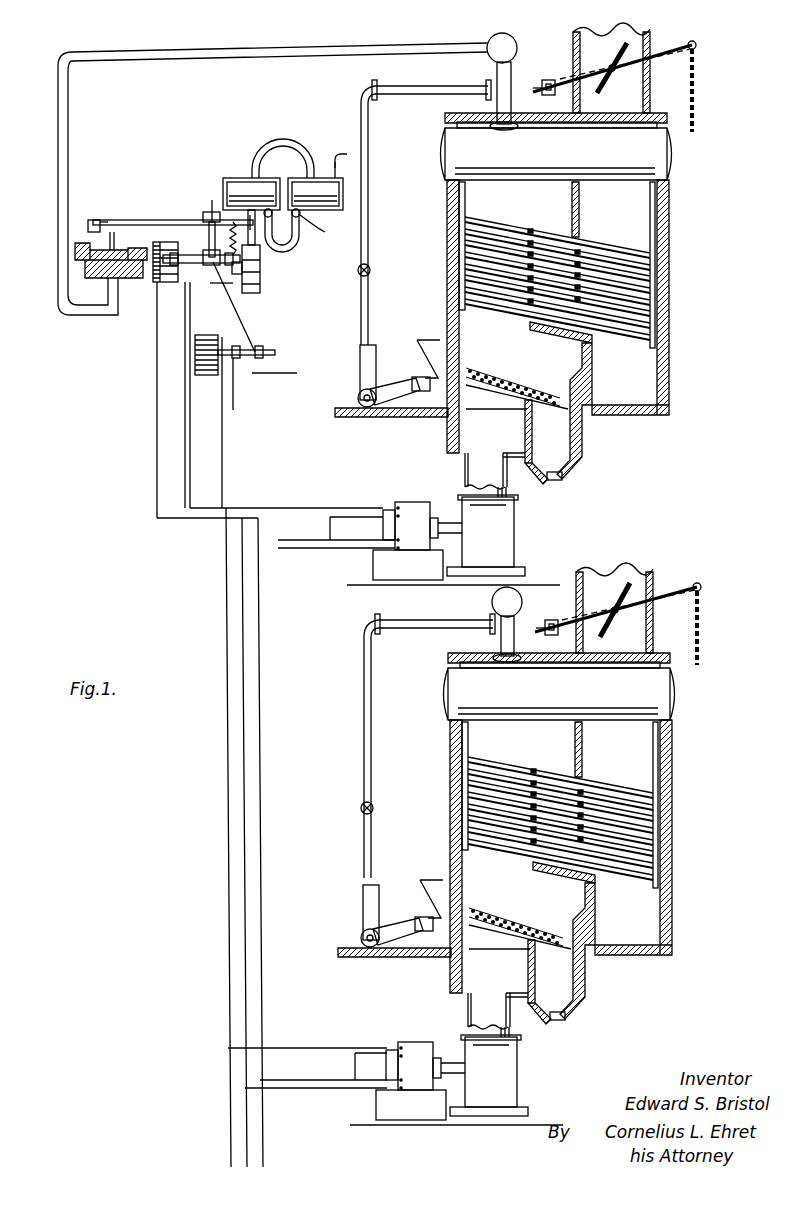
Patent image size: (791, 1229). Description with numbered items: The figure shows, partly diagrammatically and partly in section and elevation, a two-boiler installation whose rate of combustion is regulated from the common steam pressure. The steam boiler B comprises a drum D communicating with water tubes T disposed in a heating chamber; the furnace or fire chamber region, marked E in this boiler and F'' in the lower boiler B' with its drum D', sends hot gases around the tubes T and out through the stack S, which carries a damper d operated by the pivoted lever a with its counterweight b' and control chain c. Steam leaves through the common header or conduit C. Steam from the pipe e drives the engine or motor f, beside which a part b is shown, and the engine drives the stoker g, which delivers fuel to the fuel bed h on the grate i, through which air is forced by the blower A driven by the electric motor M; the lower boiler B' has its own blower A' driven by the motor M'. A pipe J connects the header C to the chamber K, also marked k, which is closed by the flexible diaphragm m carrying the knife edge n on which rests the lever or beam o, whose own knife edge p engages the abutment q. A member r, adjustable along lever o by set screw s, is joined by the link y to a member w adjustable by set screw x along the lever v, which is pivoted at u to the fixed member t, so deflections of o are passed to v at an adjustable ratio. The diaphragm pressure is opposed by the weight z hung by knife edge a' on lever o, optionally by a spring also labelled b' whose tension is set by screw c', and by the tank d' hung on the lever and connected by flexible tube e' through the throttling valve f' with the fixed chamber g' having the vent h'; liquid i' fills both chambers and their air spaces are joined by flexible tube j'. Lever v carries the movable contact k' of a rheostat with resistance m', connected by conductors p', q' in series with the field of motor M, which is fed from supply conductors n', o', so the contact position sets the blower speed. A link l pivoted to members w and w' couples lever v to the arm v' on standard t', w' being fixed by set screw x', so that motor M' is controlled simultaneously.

The air blower A is at (454, 536).
The second air blower A' is at (462, 1076).
The steam boiler B is at (502, 301).
The second steam boiler B' is at (505, 841).
The steam conduit C is at (515, 42).
The drum D is at (583, 161).
The boiler drum (second boiler) D' is at (588, 697).
The water tubes T is at (660, 255).
The coal hopper E is at (558, 403).
The coal hopper (second boiler) F'' is at (546, 943).
The stack S is at (650, 40).
The damper d is at (616, 74).
The tank or chamber d' is at (452, 377).
The pivoted lever a is at (614, 68).
The knife edge a' is at (461, 371).
The counterweight b' is at (427, 339).
The control chain c is at (714, 90).
The adjusting screw c' is at (494, 455).
The fuel bed h is at (513, 370).
The vent h' is at (449, 541).
The grate i is at (517, 418).
The liquid i' is at (457, 581).
The steam pipe e is at (424, 212).
The flexible tube e' is at (290, 248).
The stoker drive cylinder b is at (383, 364).
The engine or motor f is at (384, 391).
The stoker g is at (417, 406).
The electric motor M is at (417, 524).
The second electric motor M' is at (420, 1059).
The pipe J is at (100, 318).
The chamber K is at (120, 278).
The diaphragm m is at (96, 188).
The abutment q is at (110, 197).
The pivot or knife edge p is at (132, 205).
The knife edge or pivot n is at (140, 204).
The lever or beam o is at (173, 212).
The movable member r is at (212, 200).
The set screw s is at (211, 218).
The lever v is at (201, 244).
The pivot u is at (235, 273).
The chamber k is at (149, 290).
The fixed member t is at (241, 273).
The link y is at (260, 265).
The movable member w is at (192, 293).
The set screw x is at (210, 290).
The weight z is at (240, 270).
The slidable member w' is at (260, 304).
The link l is at (238, 300).
The flexible tube j' is at (288, 145).
The stationary chamber g' is at (329, 155).
The throttling valve f' is at (318, 229).
The resistance m' is at (119, 338).
The movable contact k' is at (166, 400).
The standard t' is at (293, 354).
The arm v' is at (255, 377).
The set screw x' is at (280, 402).
The conductor q' is at (190, 484).
The conductor p' is at (273, 411).
The supply conductor n' is at (336, 528).
The supply conductor o' is at (310, 837).